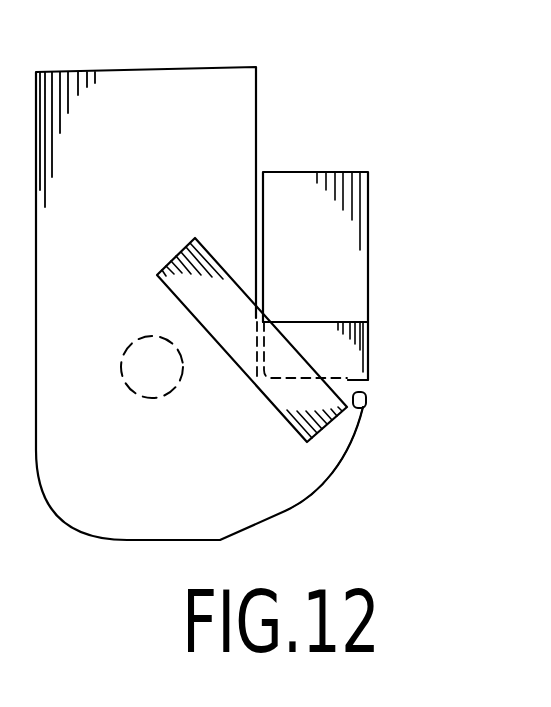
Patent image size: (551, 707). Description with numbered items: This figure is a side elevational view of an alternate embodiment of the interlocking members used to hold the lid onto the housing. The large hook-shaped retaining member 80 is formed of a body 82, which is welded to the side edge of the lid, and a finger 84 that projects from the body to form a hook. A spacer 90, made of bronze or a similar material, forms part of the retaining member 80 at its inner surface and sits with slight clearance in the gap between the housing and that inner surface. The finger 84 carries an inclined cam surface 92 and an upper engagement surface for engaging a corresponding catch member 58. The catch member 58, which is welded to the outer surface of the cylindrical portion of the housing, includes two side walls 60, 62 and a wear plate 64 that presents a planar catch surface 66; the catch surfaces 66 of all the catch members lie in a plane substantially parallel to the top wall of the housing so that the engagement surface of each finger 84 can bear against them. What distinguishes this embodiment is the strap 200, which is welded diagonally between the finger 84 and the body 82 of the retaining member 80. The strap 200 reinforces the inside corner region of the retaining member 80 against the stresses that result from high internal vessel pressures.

The catch member 58 is at (385, 233).
The side wall 60 is at (263, 195).
The side wall 62 is at (368, 192).
The wear plate 64 is at (340, 352).
The catch surface 66 is at (364, 382).
The retaining member 80 is at (268, 100).
The body 82 is at (143, 189).
The finger 84 is at (338, 433).
The spacer 90 is at (128, 388).
The inclined cam surface 92 is at (365, 410).
The strap 200 is at (197, 296).